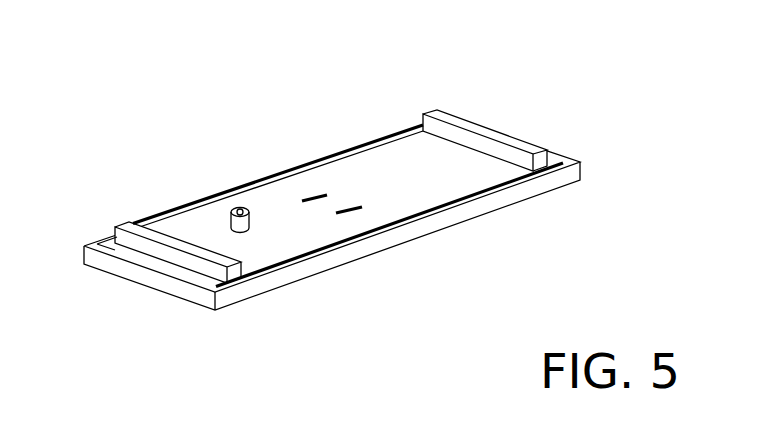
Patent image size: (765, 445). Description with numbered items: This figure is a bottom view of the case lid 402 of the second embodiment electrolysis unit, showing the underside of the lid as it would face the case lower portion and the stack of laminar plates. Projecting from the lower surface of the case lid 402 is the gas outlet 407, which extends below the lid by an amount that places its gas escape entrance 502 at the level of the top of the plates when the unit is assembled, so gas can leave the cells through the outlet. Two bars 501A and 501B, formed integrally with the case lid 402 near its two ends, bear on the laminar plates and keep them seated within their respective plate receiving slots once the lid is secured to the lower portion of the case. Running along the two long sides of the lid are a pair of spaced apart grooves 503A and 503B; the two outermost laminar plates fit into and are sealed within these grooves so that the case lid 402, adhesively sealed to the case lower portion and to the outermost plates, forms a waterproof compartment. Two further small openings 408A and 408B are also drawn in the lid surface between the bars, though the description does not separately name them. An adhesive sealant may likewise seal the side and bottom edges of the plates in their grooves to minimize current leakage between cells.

The case lid 402 is at (445, 180).
The gas outlet 407 is at (243, 221).
The slot 408A is at (316, 182).
The slot 408B is at (349, 195).
The bar 501A is at (487, 130).
The bar 501B is at (170, 253).
The gas escape entrance 502 is at (240, 196).
The groove 503A is at (411, 229).
The groove 503B is at (276, 158).